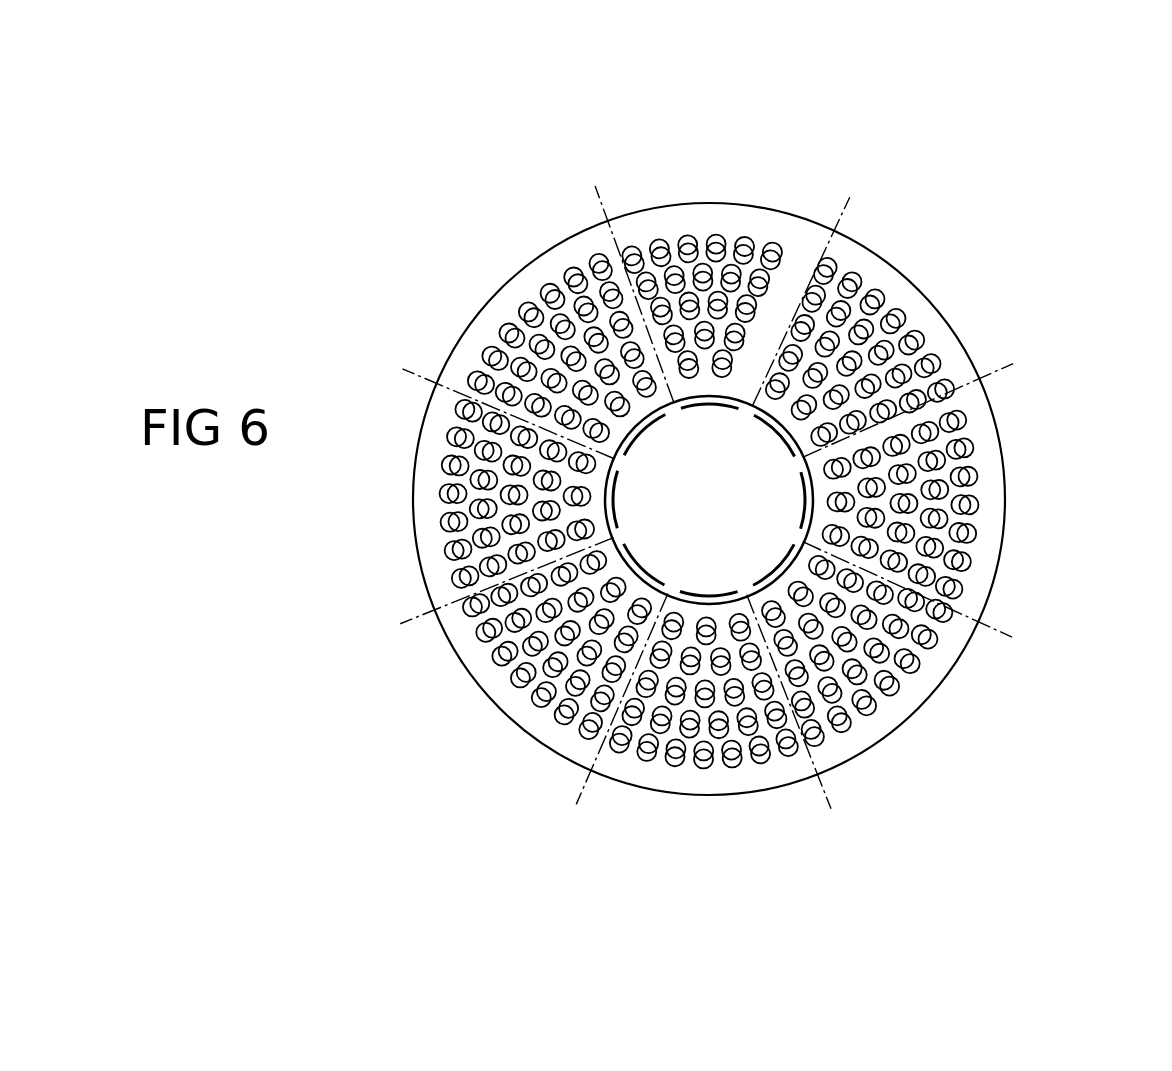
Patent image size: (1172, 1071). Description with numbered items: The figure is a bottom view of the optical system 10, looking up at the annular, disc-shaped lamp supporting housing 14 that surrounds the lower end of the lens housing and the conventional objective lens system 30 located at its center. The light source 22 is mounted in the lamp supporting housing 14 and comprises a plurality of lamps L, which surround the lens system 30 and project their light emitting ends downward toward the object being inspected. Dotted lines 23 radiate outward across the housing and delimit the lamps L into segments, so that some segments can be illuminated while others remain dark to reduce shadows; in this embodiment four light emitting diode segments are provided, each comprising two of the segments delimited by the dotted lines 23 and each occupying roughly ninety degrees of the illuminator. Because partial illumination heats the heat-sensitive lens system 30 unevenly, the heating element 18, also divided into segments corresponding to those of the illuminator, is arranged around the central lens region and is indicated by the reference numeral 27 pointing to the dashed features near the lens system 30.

The system 10 is at (492, 163).
The lamp supporting housing 14 is at (478, 323).
The heating element 18 is at (755, 397).
The light source 22 is at (489, 747).
The dotted lines 23 is at (850, 192).
The dashed recess segments 27 is at (772, 426).
The objective lens system 30 is at (698, 508).
The lamps L is at (977, 490).